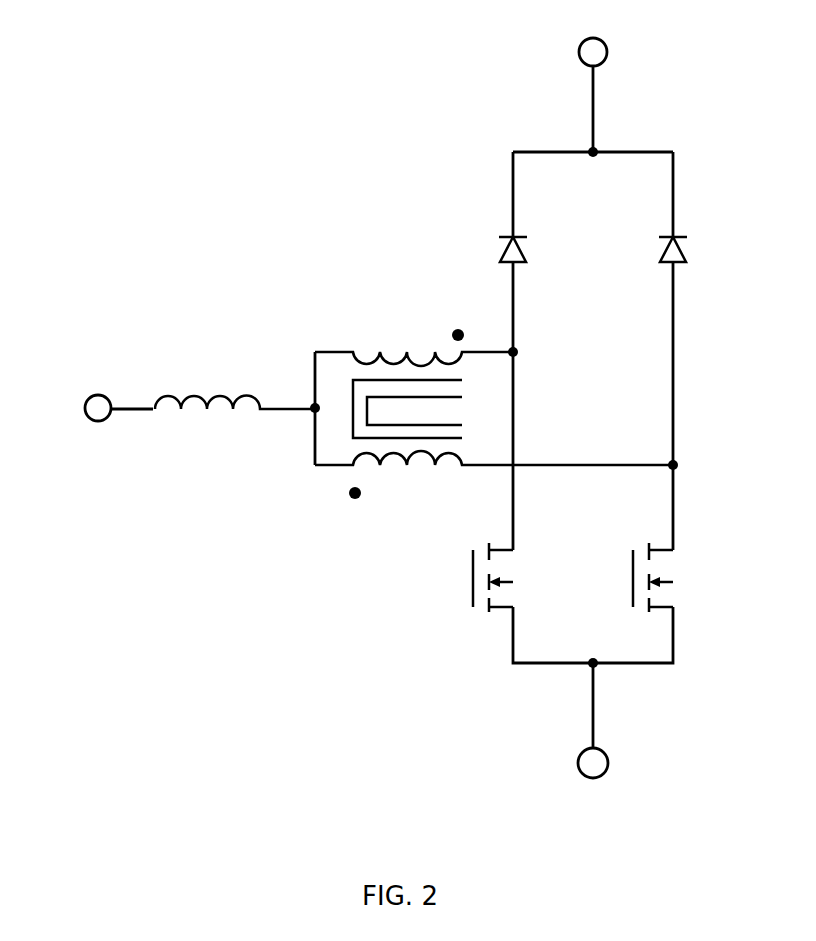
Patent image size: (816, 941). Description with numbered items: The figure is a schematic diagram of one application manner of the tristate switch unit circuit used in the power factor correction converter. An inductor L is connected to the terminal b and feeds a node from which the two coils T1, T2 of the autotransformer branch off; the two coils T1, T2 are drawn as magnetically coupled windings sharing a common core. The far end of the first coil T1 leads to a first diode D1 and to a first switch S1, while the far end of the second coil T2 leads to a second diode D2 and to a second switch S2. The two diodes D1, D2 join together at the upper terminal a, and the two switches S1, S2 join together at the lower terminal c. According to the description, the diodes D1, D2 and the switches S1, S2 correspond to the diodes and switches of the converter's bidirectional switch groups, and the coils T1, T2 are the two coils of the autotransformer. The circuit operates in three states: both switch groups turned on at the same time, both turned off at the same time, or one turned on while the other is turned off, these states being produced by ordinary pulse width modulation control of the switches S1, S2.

The terminal a is at (593, 33).
The terminal b is at (101, 413).
The terminal c is at (592, 791).
The inductor L is at (235, 364).
The coil of the autotransformer T1 is at (414, 373).
The coil of the autotransformer T2 is at (494, 491).
The diode D1 is at (479, 252).
The diode D2 is at (639, 252).
The switch S1 is at (473, 581).
The switch S2 is at (593, 581).